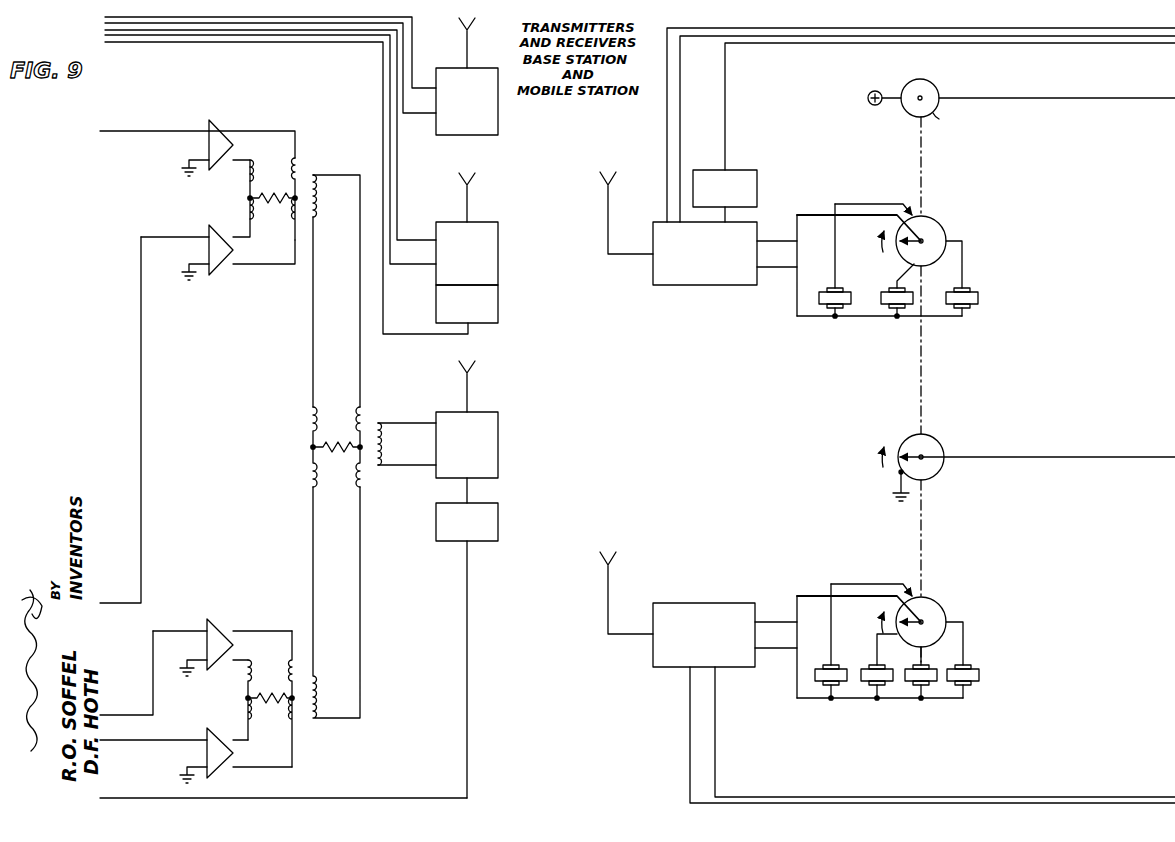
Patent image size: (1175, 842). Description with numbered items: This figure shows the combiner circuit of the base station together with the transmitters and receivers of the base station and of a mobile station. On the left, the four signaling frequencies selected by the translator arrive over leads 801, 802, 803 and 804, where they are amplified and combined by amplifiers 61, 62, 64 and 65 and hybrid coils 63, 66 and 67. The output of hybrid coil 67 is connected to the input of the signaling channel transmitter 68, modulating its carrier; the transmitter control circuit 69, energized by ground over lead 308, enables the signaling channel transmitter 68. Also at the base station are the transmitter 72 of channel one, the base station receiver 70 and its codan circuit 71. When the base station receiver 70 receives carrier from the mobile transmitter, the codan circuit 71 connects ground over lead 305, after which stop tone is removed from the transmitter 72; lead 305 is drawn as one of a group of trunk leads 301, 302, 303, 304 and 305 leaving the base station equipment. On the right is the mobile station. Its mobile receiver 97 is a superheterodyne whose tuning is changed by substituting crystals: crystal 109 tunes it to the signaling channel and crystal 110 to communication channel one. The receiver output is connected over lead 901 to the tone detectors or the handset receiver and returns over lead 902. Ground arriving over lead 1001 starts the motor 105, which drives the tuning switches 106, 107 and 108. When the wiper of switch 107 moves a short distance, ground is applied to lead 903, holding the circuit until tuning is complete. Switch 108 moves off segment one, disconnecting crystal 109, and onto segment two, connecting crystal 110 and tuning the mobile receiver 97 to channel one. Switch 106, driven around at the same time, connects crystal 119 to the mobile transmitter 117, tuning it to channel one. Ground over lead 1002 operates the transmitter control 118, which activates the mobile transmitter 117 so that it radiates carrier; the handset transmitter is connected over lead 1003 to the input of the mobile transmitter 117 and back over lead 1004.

The trunk line 301 is at (120, 40).
The trunk line 302 is at (160, 40).
The trunk line 303 is at (200, 40).
The trunk line 304 is at (241, 40).
The lead 305 is at (281, 40).
The transmitter of channel 1 72 is at (478, 136).
The base station receiver 70 is at (500, 250).
The codan circuit 71 is at (500, 303).
The signaling channel transmitter 68 is at (500, 448).
The transmitter control circuit 69 is at (500, 526).
The lead 801 is at (160, 132).
The lead 802 is at (143, 584).
The lead 803 is at (110, 715).
The lead 804 is at (110, 739).
The lead 308 is at (120, 798).
The amplifier 61 is at (222, 132).
The amplifier 62 is at (225, 268).
The hybrid coil 63 is at (314, 178).
The amplifier 64 is at (220, 631).
The amplifier 65 is at (224, 770).
The hybrid coil 66 is at (304, 650).
The hybrid coil 67 is at (378, 422).
The lead 1001 is at (1144, 98).
The lead 1002 is at (1156, 37).
The lead 1003 is at (1152, 28).
The lead 1004 is at (1058, 40).
The motor 105 is at (933, 82).
The transmitter control circuit 118 is at (758, 192).
The mobile transmitter 117 is at (710, 286).
The tuning switch 106 is at (948, 226).
The crystal 119 is at (828, 290).
The tuning switch 107 is at (943, 446).
The lead 903 is at (1112, 443).
The mobile receiver 97 is at (697, 602).
The tuning switch 108 is at (948, 607).
The crystal 109 is at (870, 666).
The crystal 110 is at (822, 666).
The lead 901 is at (1114, 793).
The lead 902 is at (1157, 796).